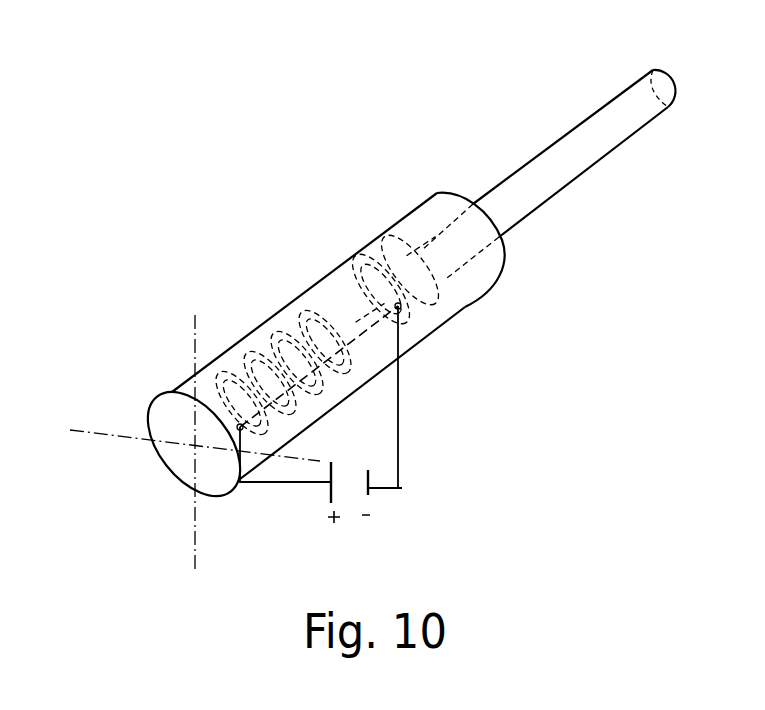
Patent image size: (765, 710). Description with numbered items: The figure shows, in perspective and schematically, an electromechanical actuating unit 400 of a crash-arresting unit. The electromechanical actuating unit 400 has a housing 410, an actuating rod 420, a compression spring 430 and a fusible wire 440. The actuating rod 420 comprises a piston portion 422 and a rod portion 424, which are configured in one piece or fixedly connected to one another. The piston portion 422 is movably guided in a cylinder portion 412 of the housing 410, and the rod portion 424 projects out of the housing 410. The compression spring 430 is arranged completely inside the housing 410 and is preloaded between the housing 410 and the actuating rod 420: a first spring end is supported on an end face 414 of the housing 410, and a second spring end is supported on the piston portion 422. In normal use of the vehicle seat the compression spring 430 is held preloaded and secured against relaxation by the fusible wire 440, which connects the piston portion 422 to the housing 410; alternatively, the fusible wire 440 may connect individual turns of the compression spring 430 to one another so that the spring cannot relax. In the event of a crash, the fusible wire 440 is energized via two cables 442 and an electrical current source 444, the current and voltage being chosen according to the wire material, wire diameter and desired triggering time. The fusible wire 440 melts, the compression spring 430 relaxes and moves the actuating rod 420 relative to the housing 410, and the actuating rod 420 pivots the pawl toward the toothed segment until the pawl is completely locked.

The electromechanical actuating unit 400 is at (116, 263).
The housing 410 is at (290, 302).
The cylinder portion 412 is at (335, 290).
The end face 414 is at (168, 423).
The actuating rod 420 is at (624, 130).
The piston portion 422 is at (388, 236).
The rod portion 424 is at (627, 103).
The compression spring 430 is at (256, 325).
The fusible wire 440 is at (363, 334).
The cables 442 is at (400, 393).
The electrical current source 444 is at (382, 521).